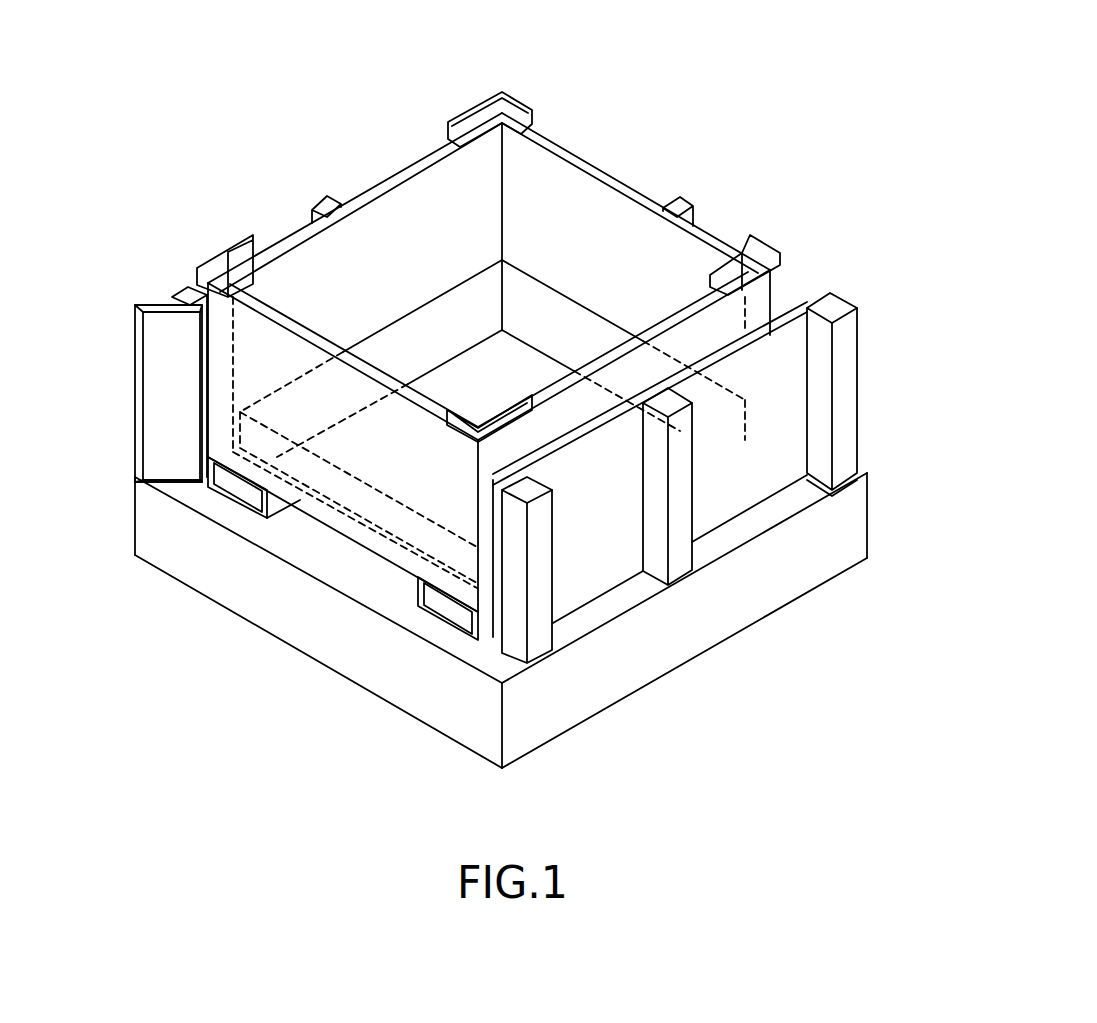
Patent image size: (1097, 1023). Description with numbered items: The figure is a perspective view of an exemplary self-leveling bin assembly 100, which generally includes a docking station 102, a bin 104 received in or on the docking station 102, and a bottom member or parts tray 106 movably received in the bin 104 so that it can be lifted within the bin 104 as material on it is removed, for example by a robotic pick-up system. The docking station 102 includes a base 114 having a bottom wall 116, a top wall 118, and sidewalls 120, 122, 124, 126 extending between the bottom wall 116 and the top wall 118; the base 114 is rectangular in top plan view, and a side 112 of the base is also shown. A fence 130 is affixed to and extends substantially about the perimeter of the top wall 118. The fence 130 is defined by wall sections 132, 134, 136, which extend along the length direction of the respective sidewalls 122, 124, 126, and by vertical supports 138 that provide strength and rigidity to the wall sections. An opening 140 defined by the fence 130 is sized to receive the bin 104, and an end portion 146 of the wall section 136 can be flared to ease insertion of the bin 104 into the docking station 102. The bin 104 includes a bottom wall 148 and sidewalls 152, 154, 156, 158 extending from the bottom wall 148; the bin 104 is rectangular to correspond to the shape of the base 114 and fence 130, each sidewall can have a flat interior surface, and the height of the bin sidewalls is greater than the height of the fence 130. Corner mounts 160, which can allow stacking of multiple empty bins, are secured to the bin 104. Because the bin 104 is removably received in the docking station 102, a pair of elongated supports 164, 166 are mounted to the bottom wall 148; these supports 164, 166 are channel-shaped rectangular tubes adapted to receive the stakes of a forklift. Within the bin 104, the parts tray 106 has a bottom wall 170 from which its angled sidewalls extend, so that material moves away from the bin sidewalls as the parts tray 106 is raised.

The self-leveling bin assembly 100 is at (216, 118).
The docking station 102 is at (400, 700).
The bin 104 is at (584, 146).
The parts tray 106 is at (455, 318).
The first side of pallet 112 is at (673, 660).
The base 114 is at (475, 745).
The bottom wall 116 is at (340, 682).
The top wall 118 is at (353, 594).
The sidewall 120 is at (288, 634).
The sidewall 122 is at (757, 614).
The sidewall 124 is at (869, 503).
The sidewall 126 is at (135, 512).
The fence 130 is at (583, 578).
The wall section 132 is at (780, 473).
The wall section 134 is at (790, 292).
The wall section 136 is at (132, 393).
The vertical supports 138 is at (320, 204).
The opening 140 is at (281, 532).
The end portion 146 is at (158, 455).
The bottom wall 148 is at (318, 517).
The sidewall 152 is at (398, 527).
The sidewall 154 is at (575, 415).
The sidewall 156 is at (600, 205).
The sidewall 158 is at (300, 265).
The corner mounts 160 is at (505, 90).
The elongated support 164 is at (208, 586).
The elongated support 166 is at (463, 622).
The bottom wall 170 is at (512, 389).